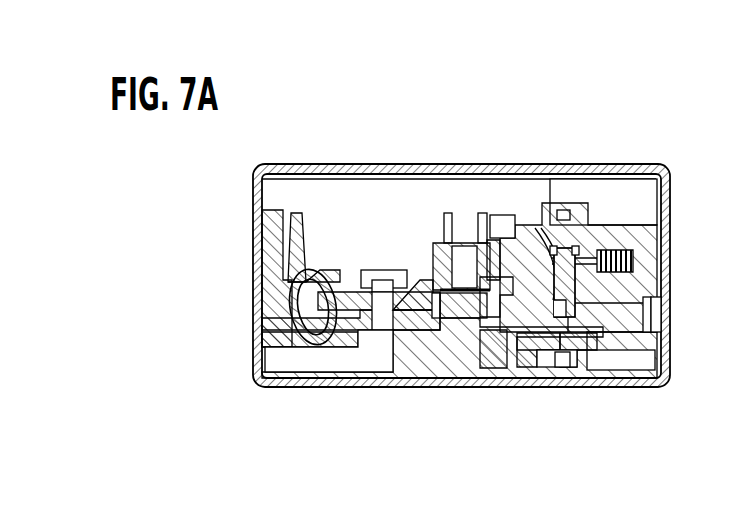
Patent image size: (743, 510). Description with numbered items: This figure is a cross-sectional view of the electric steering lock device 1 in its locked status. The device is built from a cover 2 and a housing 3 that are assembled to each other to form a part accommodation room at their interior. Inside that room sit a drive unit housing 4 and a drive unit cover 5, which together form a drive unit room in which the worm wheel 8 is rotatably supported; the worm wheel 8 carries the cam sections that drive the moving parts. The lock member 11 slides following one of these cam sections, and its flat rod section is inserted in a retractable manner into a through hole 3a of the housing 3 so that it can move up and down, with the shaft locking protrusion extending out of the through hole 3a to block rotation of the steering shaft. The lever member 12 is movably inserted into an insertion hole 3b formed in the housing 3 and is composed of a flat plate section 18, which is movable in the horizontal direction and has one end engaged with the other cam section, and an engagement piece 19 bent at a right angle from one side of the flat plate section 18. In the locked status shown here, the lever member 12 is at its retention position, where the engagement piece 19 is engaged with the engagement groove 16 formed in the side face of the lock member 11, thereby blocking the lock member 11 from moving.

The electric steering lock device 1 is at (243, 232).
The cover 2 is at (593, 172).
The housing 3 is at (662, 172).
The through hole 3a is at (567, 246).
The insertion hole 3b is at (670, 312).
The drive unit housing 4 is at (303, 212).
The drive unit cover 5 is at (254, 327).
The worm wheel 8 is at (455, 243).
The lock member 11 is at (535, 243).
The lever member 12 is at (605, 447).
The engagement groove 16 is at (505, 233).
The flat plate section 18 is at (515, 337).
The engagement piece 19 is at (589, 322).